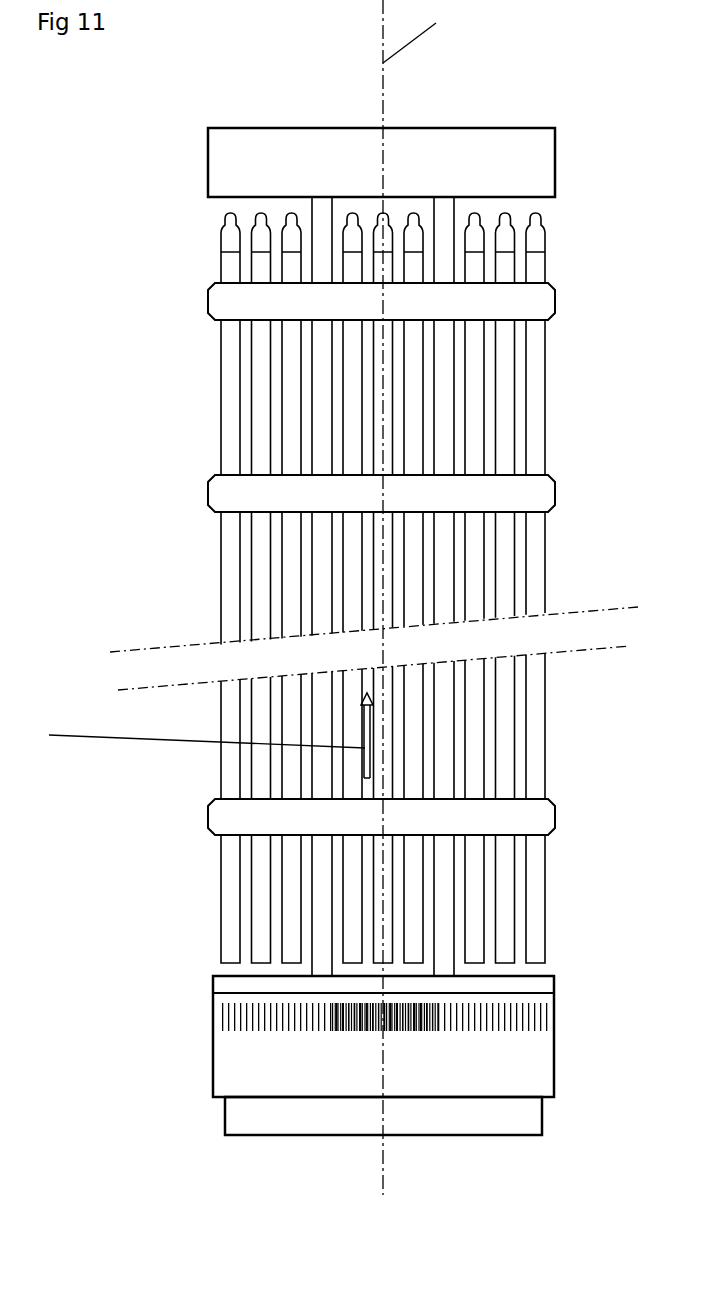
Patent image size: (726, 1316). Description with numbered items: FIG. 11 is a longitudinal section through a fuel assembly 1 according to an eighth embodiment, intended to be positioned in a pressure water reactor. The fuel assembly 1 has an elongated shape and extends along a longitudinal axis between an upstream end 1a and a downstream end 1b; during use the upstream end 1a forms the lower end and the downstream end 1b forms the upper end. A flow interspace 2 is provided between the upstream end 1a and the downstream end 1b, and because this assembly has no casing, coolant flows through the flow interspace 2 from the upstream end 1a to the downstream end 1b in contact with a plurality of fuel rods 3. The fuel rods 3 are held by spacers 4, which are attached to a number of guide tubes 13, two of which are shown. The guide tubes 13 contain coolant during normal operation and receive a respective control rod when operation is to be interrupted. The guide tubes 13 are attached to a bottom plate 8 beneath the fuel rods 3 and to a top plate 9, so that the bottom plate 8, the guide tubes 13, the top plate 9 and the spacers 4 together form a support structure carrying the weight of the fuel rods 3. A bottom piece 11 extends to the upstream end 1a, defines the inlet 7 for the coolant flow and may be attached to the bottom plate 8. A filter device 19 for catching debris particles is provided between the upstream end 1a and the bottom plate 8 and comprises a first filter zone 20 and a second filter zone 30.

The fuel assembly 1 is at (530, 98).
The upstream end 1a is at (564, 1126).
The downstream end 1b is at (577, 126).
The flow interspace 2 is at (380, 590).
The fuel rods 3 is at (413, 592).
The spacers 4 is at (535, 302).
The inlet 7 is at (285, 1128).
The bottom plate 8 is at (512, 983).
The top plate 9 is at (513, 160).
The bottom piece 11 is at (213, 1060).
The guide tubes 13 is at (317, 410).
The filter device 19 is at (569, 1010).
The first filter zone 20 is at (232, 1013).
The second filter zone 30 is at (233, 1039).